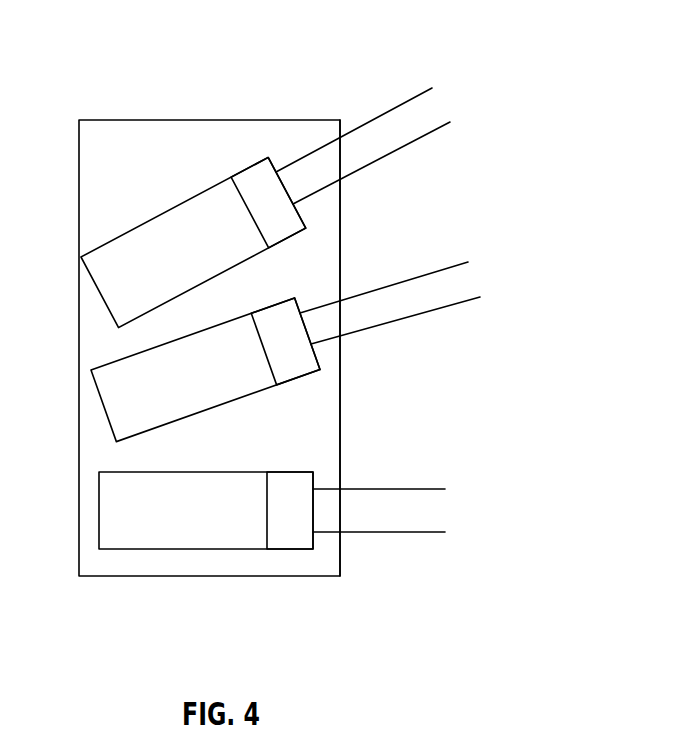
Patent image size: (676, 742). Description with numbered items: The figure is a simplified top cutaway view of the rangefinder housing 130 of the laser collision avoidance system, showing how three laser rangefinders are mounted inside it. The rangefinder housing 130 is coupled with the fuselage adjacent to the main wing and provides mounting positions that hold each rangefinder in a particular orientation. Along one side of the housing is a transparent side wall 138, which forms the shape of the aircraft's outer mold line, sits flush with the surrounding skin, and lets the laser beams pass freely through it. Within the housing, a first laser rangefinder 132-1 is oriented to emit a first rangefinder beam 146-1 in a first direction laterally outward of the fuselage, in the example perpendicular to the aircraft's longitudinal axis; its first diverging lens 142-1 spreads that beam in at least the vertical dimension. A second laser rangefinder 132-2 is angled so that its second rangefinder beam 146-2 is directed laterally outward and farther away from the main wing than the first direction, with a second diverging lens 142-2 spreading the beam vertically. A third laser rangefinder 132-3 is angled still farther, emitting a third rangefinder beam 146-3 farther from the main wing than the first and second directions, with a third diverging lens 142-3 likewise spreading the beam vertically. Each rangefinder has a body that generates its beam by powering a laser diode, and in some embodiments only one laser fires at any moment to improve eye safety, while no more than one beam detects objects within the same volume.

The rangefinder housing 130 is at (133, 120).
The transparent side wall 138 is at (343, 263).
The first laser rangefinder 132-1 is at (230, 531).
The second laser rangefinder 132-2 is at (240, 386).
The third laser rangefinder 132-3 is at (228, 254).
The first diverging lens 142-1 is at (290, 550).
The second diverging lens 142-2 is at (300, 380).
The third diverging lens 142-3 is at (253, 162).
The first rangefinder beam 146-1 is at (403, 533).
The second rangefinder beam 146-2 is at (415, 318).
The third rangefinder beam 146-3 is at (418, 140).